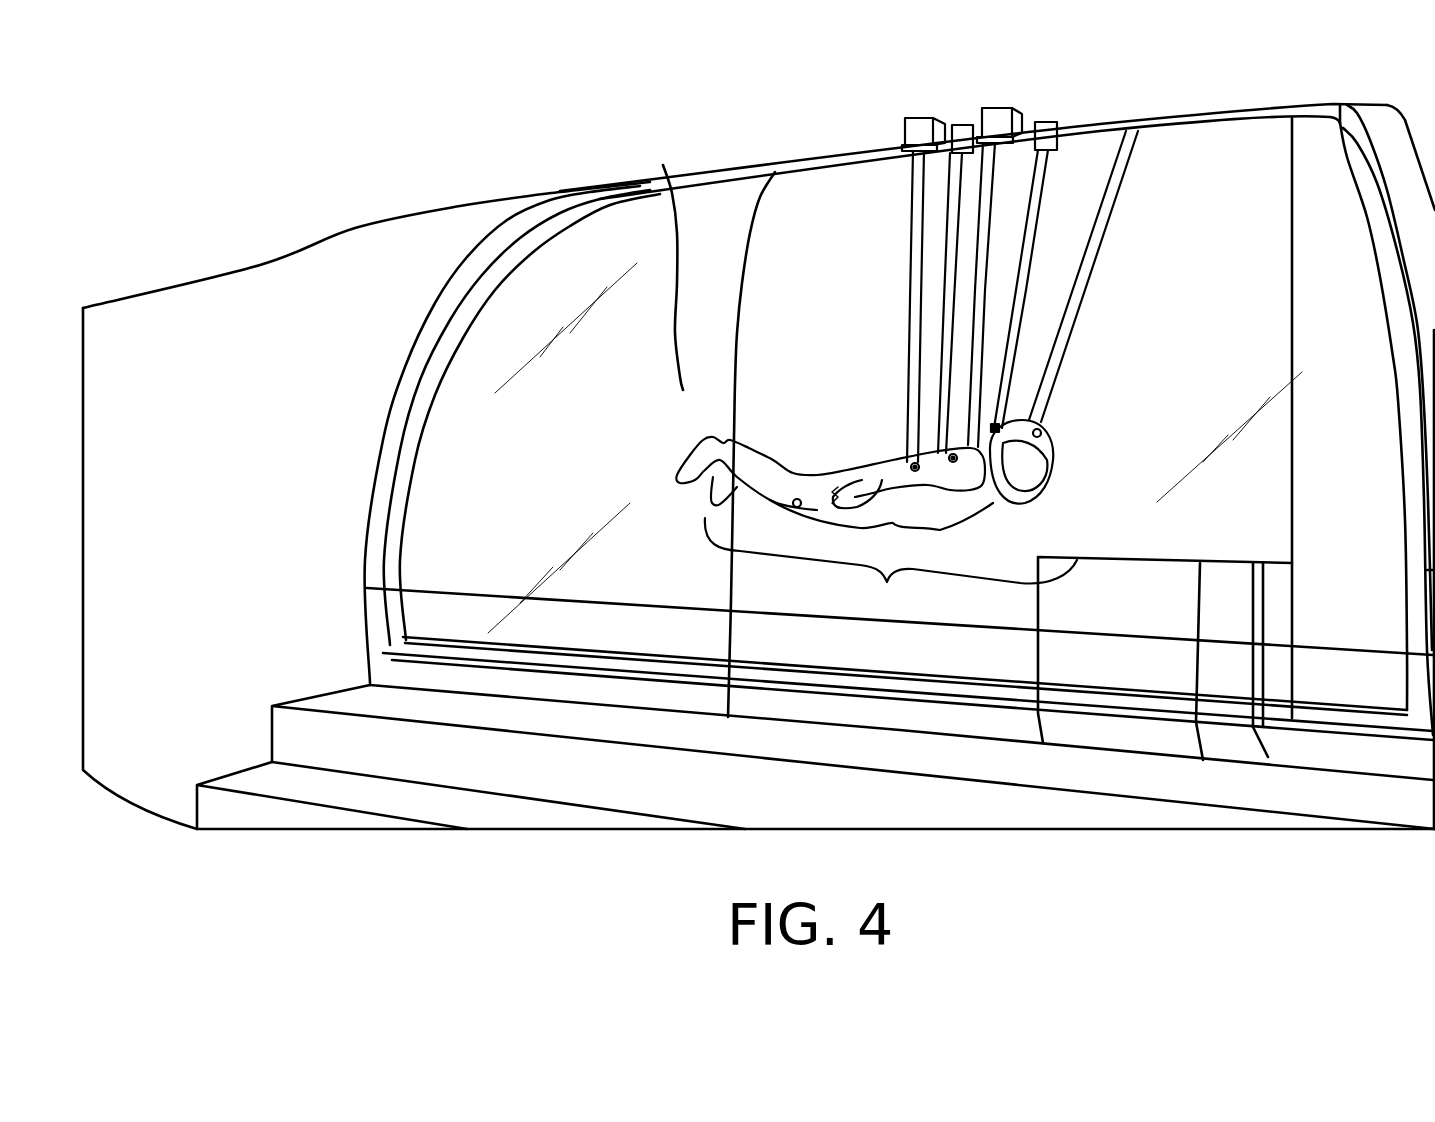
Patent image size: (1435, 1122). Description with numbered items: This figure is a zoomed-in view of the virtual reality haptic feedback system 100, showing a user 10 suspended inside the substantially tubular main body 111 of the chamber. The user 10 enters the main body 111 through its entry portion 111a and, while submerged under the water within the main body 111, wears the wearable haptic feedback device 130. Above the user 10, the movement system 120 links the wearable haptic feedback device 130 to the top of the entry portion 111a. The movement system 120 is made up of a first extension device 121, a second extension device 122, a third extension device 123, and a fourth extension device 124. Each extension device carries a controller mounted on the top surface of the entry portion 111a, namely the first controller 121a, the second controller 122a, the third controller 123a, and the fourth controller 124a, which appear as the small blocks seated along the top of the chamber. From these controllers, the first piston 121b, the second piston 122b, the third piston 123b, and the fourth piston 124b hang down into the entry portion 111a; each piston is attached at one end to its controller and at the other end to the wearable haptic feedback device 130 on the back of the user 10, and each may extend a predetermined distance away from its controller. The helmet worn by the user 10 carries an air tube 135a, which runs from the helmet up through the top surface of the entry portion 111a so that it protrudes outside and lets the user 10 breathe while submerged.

The virtual reality haptic feedback system 100 is at (294, 172).
The main body 111 is at (257, 275).
The entry portion 111a is at (557, 247).
The movement system 120 is at (760, 118).
The first extension device 121 is at (956, 128).
The first controller 121a is at (945, 153).
The first piston 121b is at (940, 322).
The second extension device 122 is at (906, 145).
The second controller 122a is at (923, 130).
The second piston 122b is at (917, 200).
The third extension device 123 is at (1057, 127).
The third controller 123a is at (1060, 130).
The third piston 123b is at (1027, 213).
The fourth extension device 124 is at (1020, 130).
The fourth controller 124a is at (1002, 127).
The fourth piston 124b is at (973, 310).
The air tube 135a is at (1075, 273).
The user 10 is at (973, 495).
The wearable haptic feedback device 130 is at (891, 567).